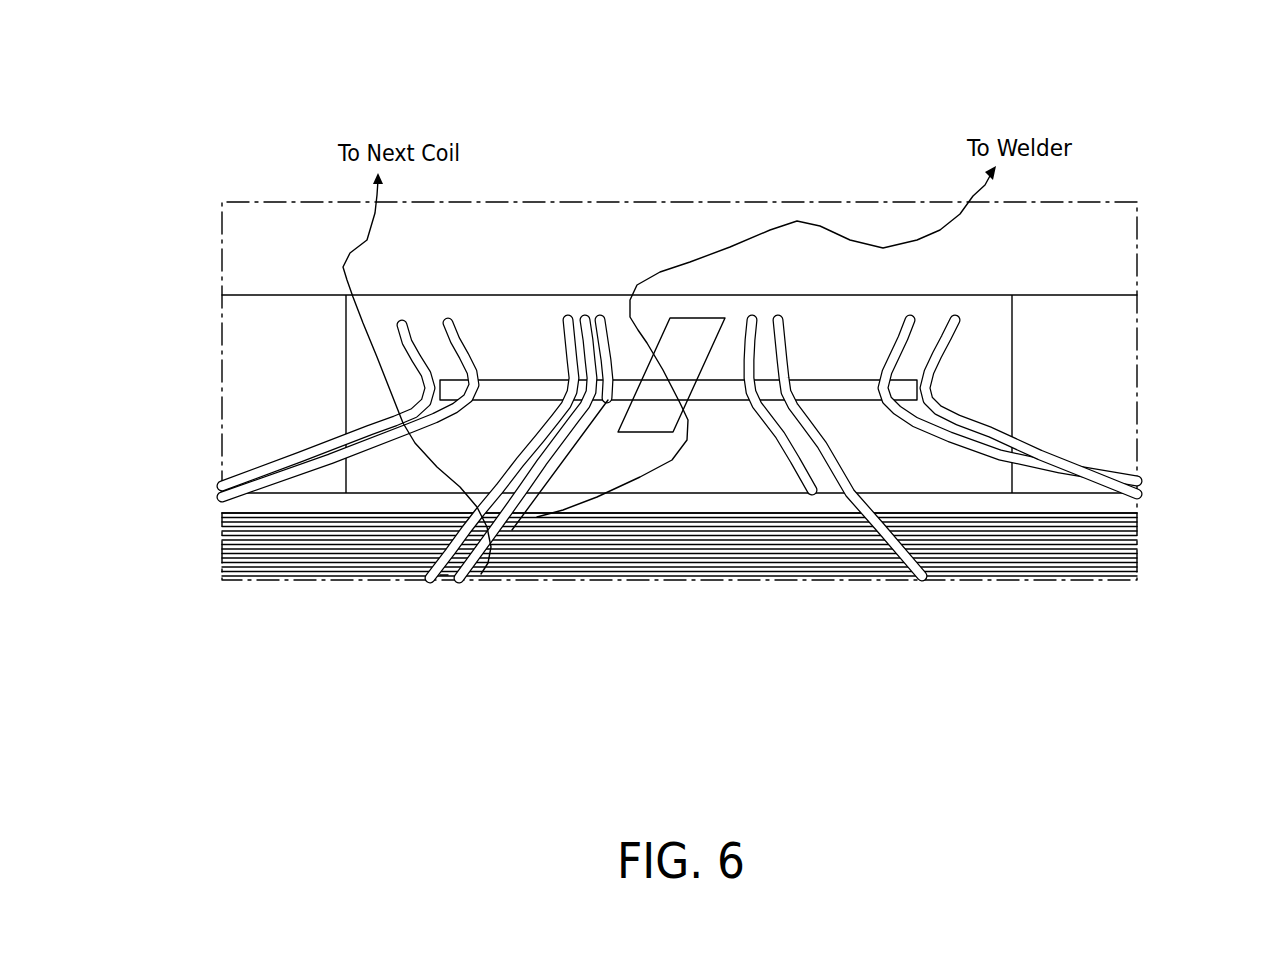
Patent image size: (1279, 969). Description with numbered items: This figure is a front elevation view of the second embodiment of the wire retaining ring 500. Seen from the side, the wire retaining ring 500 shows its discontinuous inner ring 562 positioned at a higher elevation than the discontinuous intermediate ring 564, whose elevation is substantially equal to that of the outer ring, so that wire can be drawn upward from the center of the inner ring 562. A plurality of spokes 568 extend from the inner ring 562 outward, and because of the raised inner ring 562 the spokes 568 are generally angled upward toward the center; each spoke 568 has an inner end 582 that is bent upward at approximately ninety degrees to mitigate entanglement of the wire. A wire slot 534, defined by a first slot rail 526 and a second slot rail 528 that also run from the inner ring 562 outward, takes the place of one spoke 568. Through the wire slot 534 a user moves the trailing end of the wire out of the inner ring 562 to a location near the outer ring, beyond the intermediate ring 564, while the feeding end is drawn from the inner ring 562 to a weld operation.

The wire retaining ring 500 is at (177, 132).
The first slot rail 526 is at (450, 572).
The second slot rail 528 is at (463, 574).
The wire slot 534 is at (445, 570).
The inner ring 562 is at (826, 317).
The intermediate ring 564 is at (1083, 505).
The spokes 568 is at (940, 437).
The inner end 582 is at (410, 323).